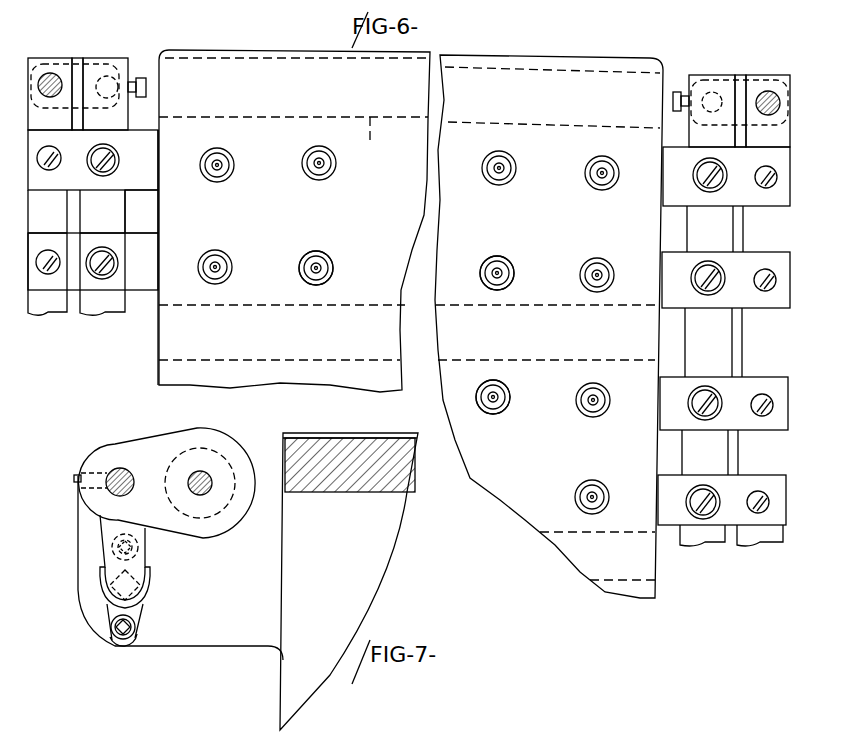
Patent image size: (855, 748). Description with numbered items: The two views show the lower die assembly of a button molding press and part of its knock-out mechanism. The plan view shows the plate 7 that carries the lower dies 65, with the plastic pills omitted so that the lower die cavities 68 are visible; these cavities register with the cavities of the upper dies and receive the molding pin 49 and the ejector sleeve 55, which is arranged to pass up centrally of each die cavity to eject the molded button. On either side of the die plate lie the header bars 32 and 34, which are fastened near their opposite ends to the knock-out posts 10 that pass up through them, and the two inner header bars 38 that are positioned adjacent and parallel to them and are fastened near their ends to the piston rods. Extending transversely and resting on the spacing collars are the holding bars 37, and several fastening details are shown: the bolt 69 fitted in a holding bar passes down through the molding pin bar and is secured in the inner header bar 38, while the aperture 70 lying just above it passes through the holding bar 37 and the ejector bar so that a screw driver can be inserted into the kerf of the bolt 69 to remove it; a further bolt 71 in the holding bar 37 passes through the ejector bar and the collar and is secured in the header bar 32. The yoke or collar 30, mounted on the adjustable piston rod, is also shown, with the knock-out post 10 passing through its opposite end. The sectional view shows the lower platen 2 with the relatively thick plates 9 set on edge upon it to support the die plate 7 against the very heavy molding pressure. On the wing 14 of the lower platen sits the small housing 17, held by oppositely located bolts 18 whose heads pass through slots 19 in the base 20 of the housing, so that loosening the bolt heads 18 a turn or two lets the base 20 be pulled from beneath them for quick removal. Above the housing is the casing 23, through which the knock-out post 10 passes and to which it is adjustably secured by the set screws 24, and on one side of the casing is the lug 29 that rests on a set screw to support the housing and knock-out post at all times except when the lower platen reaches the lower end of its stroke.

In FIG. 7, the lower platen 2 is at (380, 558).
In FIG. 6, the plate 7 is at (163, 368).
In FIG. 6, the plates 9 is at (378, 308).
In FIG. 7, the plates 9 is at (367, 485).
In FIG. 6, the knock-out post 10 is at (51, 74).
In FIG. 7, the knock-out post 10 is at (112, 470).
In FIG. 7, the wing 14 is at (248, 636).
In FIG. 7, the housing 17 is at (152, 591).
In FIG. 7, the bolts 18 is at (110, 553).
In FIG. 7, the slots 19 is at (139, 549).
In FIG. 7, the base 20 is at (152, 606).
In FIG. 7, the casing 23 is at (150, 448).
In FIG. 7, the set screws 24 is at (76, 485).
In FIG. 7, the lug 29 is at (102, 533).
In FIG. 6, the yoke or collar 30 is at (78, 68).
In FIG. 6, the header bar 32 is at (47, 305).
In FIG. 6, the header bar 34 is at (758, 538).
In FIG. 6, the holding bar 37 is at (145, 173).
In FIG. 6, the inner header bars 38 is at (107, 305).
In FIG. 6, the molding pin 49 is at (216, 270).
In FIG. 6, the ejector sleeve 55 is at (317, 163).
In FIG. 6, the lower dies 65 is at (328, 180).
In FIG. 6, the lower die cavities 68 is at (307, 177).
In FIG. 6, the bolt 69 is at (105, 174).
In FIG. 6, the aperture 70 is at (117, 163).
In FIG. 6, the bolt 71 is at (52, 170).